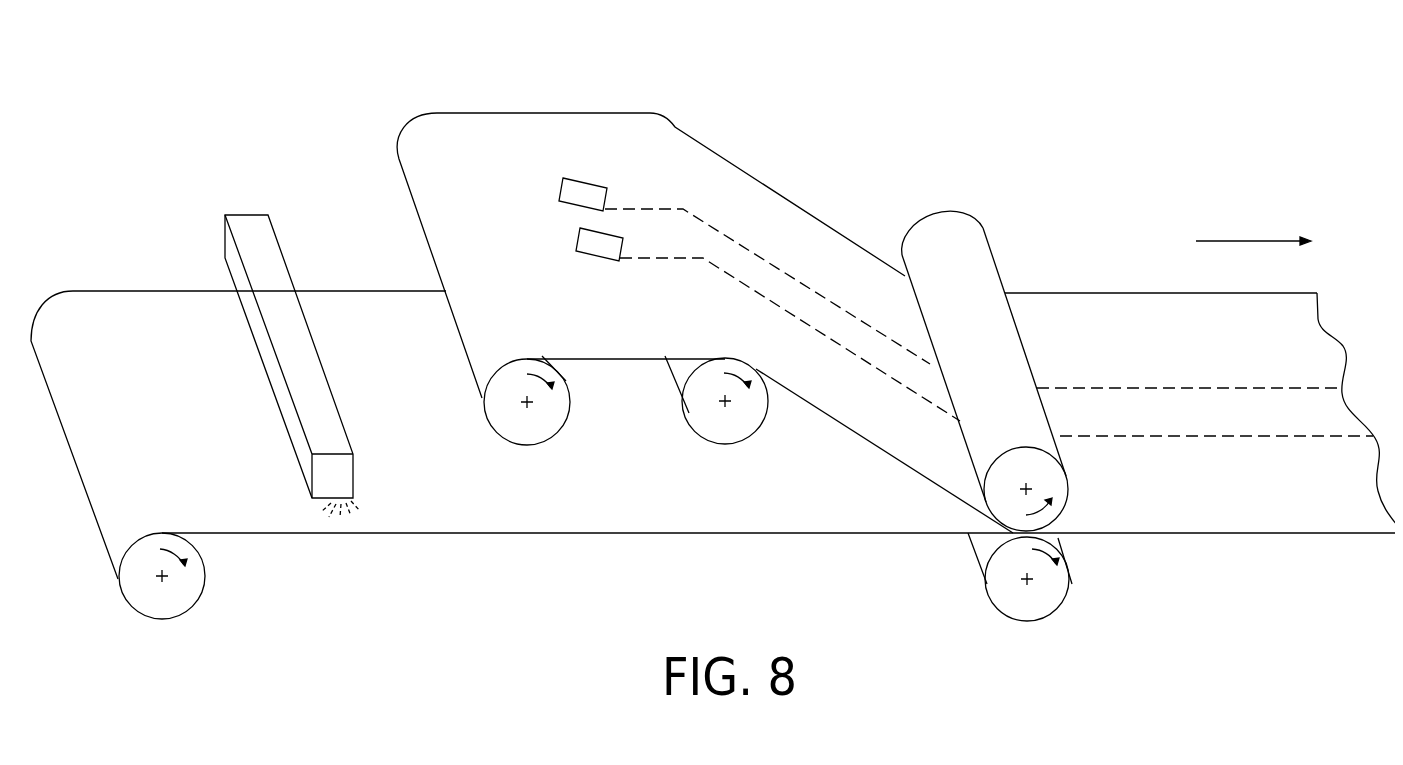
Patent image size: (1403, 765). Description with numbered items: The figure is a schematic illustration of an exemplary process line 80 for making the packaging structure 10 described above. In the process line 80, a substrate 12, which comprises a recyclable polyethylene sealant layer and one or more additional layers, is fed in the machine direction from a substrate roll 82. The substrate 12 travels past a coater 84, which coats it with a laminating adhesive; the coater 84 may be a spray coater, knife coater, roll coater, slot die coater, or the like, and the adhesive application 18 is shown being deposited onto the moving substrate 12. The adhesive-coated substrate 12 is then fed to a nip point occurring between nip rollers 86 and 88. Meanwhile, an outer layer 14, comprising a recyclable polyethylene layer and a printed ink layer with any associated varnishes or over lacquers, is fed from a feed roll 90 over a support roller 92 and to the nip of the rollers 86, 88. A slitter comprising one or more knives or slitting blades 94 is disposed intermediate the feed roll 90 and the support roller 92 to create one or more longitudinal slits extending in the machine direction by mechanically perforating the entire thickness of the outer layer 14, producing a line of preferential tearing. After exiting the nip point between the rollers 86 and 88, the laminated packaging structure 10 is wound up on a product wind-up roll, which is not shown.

The process line 80 is at (152, 91).
The substrate roll 82 is at (172, 593).
The coater 84 is at (256, 232).
The coating spray 18 is at (345, 507).
The substrate 12 is at (527, 533).
The outer layer 14 is at (675, 150).
The slitting blades 94 is at (585, 238).
The feed roll 90 is at (547, 412).
The support roller 92 is at (730, 420).
The packaging structure 10 is at (1115, 307).
The nip roller 88 is at (1043, 476).
The nip roller 86 is at (1043, 597).